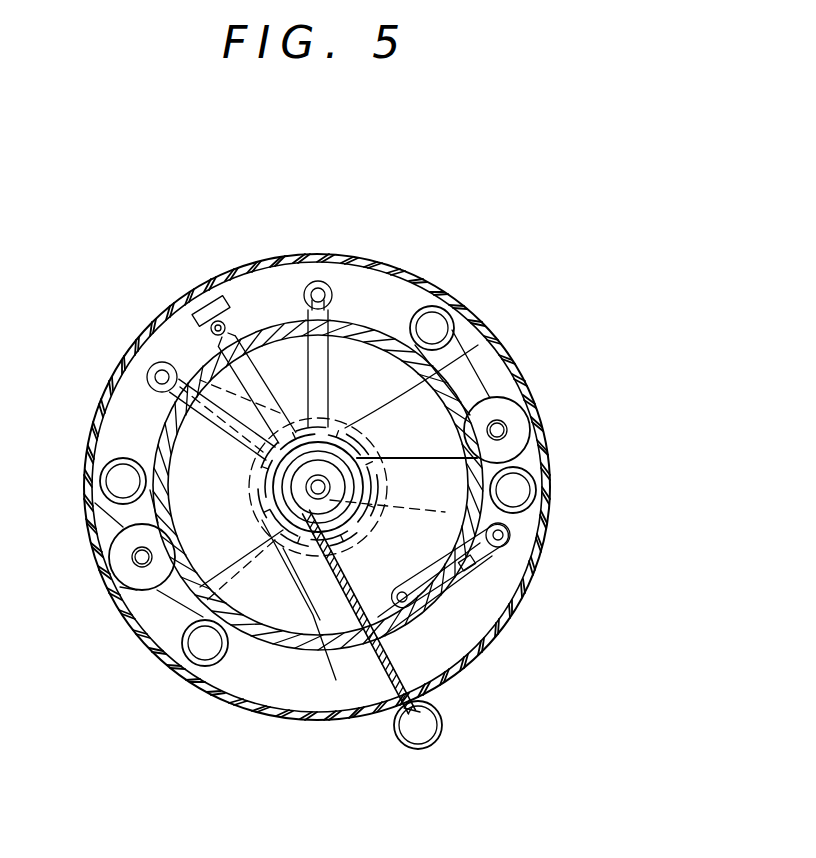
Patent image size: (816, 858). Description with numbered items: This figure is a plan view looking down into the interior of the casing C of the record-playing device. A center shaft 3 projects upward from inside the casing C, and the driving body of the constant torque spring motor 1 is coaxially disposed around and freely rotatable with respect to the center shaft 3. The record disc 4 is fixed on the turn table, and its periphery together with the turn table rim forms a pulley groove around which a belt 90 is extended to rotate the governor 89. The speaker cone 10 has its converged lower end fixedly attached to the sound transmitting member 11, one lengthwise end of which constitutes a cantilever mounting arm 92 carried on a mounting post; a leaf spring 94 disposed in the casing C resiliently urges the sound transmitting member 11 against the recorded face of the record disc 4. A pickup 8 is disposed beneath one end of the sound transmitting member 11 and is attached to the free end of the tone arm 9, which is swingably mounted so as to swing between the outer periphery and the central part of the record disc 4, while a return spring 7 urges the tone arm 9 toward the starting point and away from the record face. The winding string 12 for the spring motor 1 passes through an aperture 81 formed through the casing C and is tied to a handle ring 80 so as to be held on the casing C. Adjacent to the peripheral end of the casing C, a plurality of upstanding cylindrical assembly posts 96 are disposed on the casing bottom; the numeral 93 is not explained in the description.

The casing C is at (440, 276).
The constant torque spring motor 1 is at (407, 458).
The center shaft 3 is at (322, 483).
The record disc 4 is at (362, 367).
The return spring 7 is at (508, 546).
The pickup 8 is at (405, 603).
The tone arm 9 is at (448, 590).
The speaker cone 10 is at (276, 677).
The sound transmitting member 11 is at (520, 497).
The winding string 12 is at (333, 680).
The handle ring 80 is at (432, 742).
The aperture 81 is at (405, 722).
The governor 89 is at (132, 577).
The belt 90 is at (175, 595).
The mounting arm 92 is at (355, 296).
The hole 93 is at (316, 282).
The leaf spring 94 is at (246, 305).
The assembly posts 96 is at (103, 500).